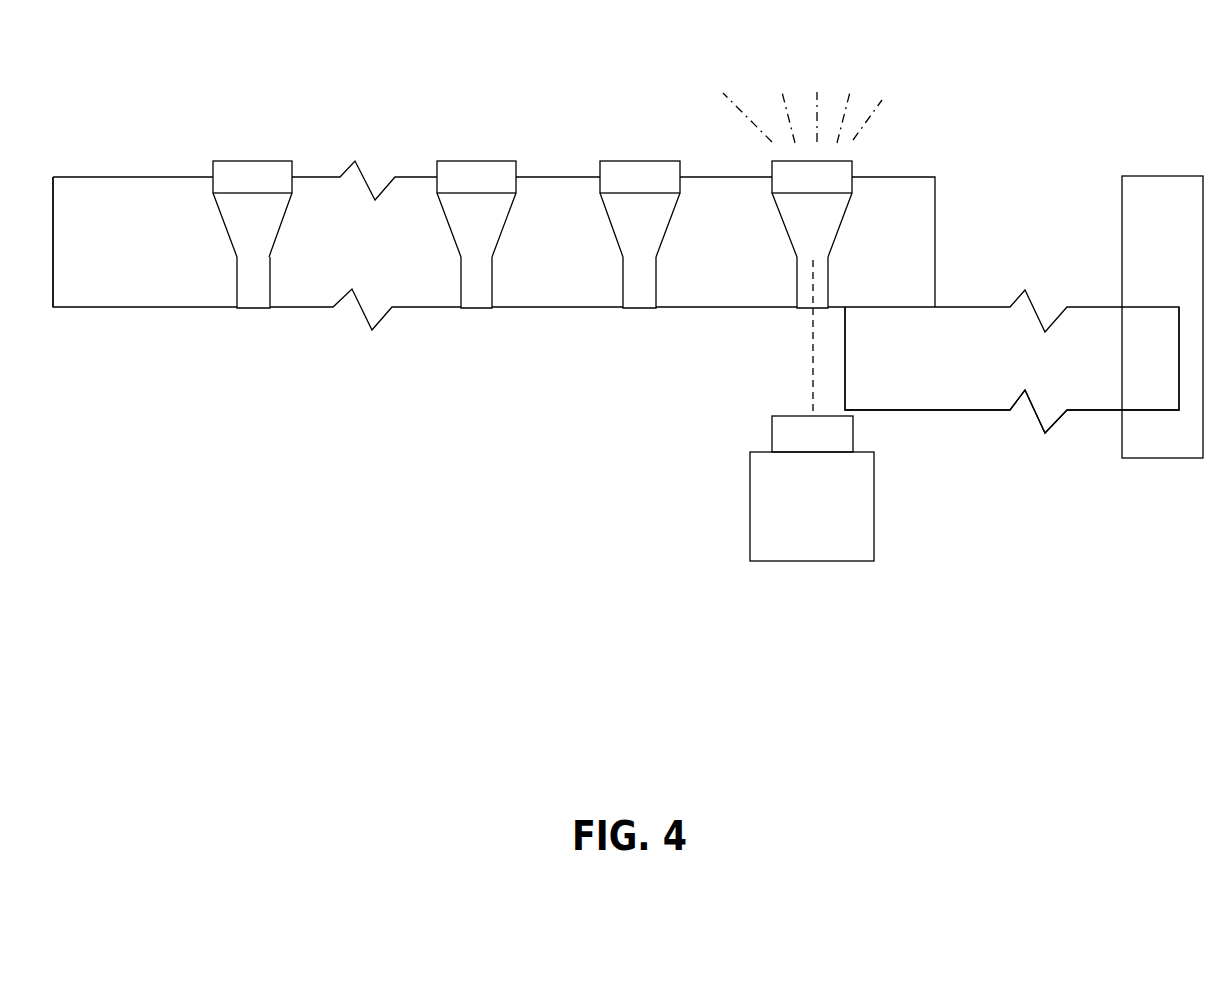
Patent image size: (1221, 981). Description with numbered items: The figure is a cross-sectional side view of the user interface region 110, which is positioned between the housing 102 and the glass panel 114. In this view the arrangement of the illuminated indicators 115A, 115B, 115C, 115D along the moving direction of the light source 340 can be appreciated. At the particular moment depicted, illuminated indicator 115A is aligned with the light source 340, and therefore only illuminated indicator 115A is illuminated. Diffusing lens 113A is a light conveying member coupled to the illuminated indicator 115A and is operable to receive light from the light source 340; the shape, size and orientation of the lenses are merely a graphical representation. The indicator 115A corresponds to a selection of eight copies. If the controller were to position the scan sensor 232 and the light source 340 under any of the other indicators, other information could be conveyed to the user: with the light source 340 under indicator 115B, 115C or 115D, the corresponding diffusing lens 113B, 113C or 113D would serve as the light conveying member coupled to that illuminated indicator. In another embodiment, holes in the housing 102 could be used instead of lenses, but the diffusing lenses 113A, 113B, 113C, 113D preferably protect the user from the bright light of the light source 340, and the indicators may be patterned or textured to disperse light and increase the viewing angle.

The housing 102 is at (80, 177).
The user interface region 110 is at (335, 548).
The diffusing lens 113A is at (797, 288).
The diffusing lens 113B is at (632, 308).
The diffusing lens 113C is at (465, 308).
The diffusing lens 113D is at (242, 308).
The glass panel 114 is at (1000, 307).
The illuminated indicator 115A is at (772, 160).
The illuminated indicator 115B is at (608, 161).
The illuminated indicator 115C is at (455, 161).
The illuminated indicator 115D is at (285, 161).
The scan sensor 232 is at (787, 534).
The light source 340 is at (853, 447).